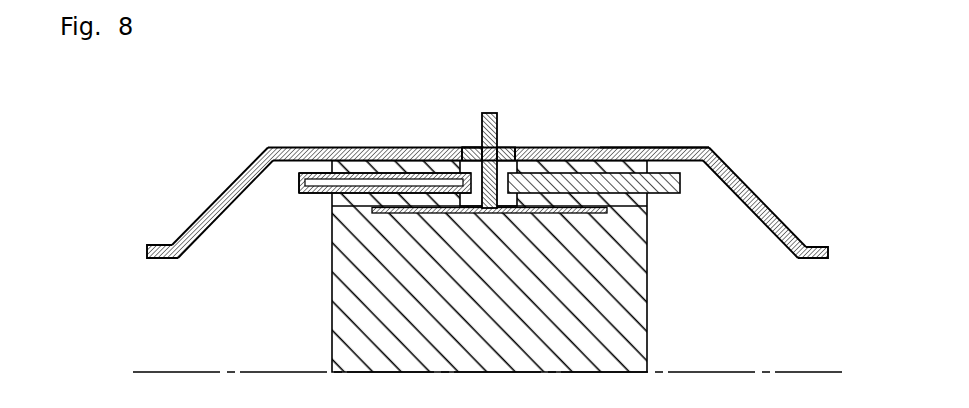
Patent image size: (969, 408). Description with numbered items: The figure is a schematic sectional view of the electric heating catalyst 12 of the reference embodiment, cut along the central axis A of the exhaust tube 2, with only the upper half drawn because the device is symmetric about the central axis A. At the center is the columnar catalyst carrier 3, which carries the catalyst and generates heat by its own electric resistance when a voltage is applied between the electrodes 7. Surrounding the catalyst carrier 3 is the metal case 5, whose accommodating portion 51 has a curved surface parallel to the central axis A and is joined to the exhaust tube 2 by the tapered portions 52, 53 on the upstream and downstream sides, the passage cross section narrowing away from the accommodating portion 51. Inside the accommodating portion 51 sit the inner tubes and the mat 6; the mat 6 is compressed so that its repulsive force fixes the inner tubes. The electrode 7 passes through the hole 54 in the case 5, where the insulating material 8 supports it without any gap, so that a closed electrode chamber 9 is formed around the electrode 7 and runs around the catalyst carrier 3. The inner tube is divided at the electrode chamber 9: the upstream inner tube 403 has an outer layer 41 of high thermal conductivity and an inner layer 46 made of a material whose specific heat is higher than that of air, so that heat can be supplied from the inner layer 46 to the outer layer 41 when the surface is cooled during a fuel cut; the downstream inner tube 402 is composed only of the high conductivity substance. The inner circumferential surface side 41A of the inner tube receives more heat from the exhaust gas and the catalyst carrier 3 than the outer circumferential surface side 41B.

The exhaust tube 2 is at (156, 245).
The catalyst carrier 3 is at (648, 267).
The case 5 is at (582, 148).
The accommodating portion 51 is at (638, 148).
The tapered portion 52 is at (220, 194).
The tapered portion 53 is at (755, 190).
The mat 6 is at (648, 202).
The electrode 7 is at (489, 112).
The insulating material 8 is at (507, 148).
The electrode chamber 9 is at (462, 152).
The hole 54 is at (477, 149).
The electric heating catalyst 12 is at (716, 79).
The outer layer 41 is at (299, 175).
The inner circumferential surface side 41A is at (327, 194).
The outer circumferential surface side 41B is at (327, 172).
The inner layer 46 is at (300, 192).
The inner tube 402 is at (681, 188).
The inner tube 403 is at (320, 172).
The central axis A is at (757, 370).